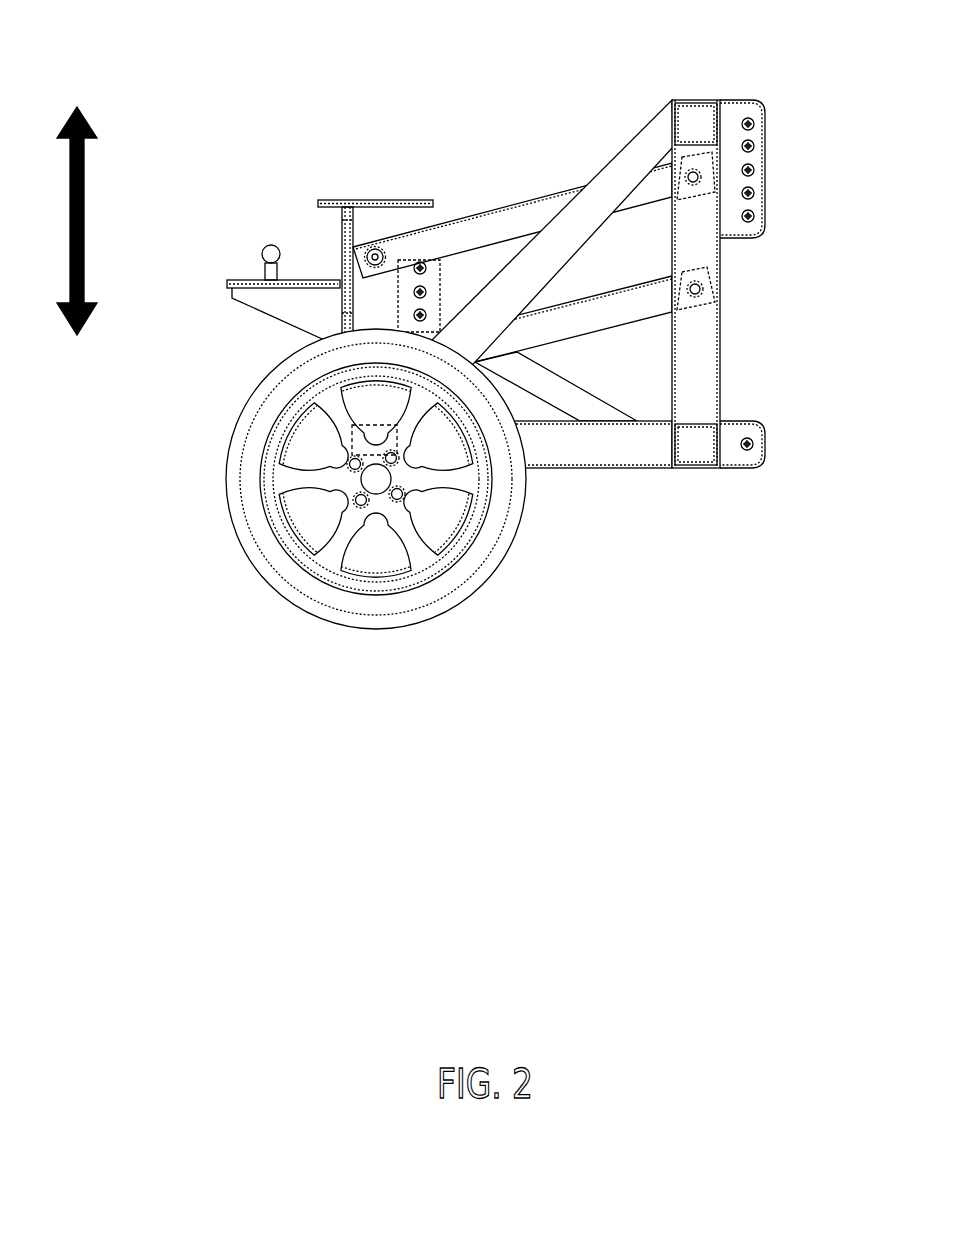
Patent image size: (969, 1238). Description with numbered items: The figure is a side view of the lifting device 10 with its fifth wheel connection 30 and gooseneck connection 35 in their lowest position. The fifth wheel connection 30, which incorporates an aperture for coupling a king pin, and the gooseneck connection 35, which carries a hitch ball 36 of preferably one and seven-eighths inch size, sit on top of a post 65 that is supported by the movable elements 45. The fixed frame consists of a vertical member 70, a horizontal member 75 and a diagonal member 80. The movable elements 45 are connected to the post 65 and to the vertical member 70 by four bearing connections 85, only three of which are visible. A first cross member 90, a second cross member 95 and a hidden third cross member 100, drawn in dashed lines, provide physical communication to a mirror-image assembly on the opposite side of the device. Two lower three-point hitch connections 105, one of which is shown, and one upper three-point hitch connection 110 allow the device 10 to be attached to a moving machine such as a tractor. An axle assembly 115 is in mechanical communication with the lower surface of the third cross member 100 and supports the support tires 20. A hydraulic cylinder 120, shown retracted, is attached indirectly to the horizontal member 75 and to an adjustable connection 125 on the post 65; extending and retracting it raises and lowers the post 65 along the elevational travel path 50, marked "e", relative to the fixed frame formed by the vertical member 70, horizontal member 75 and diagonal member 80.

The device 10 is at (184, 834).
The support tires 20 is at (343, 587).
The fifth wheel connection 30 is at (333, 203).
The gooseneck connection 35 is at (258, 278).
The hitch ball 36 is at (265, 248).
The movable elements 45 is at (525, 212).
The elevational travel path 50 is at (88, 135).
The post 65 is at (378, 298).
The vertical member 70 is at (695, 357).
The horizontal member 75 is at (567, 453).
The diagonal member 80 is at (647, 143).
The bearing connections 85 is at (368, 253).
The first cross member 90 is at (697, 123).
The second cross member 95 is at (700, 442).
The third cross member 100 is at (352, 437).
The lower three-point hitch connections 105 is at (752, 450).
The upper three-point hitch connection 110 is at (757, 147).
The axle assembly 115 is at (373, 477).
The hydraulic cylinder 120 is at (593, 408).
The adjustable connection 125 is at (430, 277).